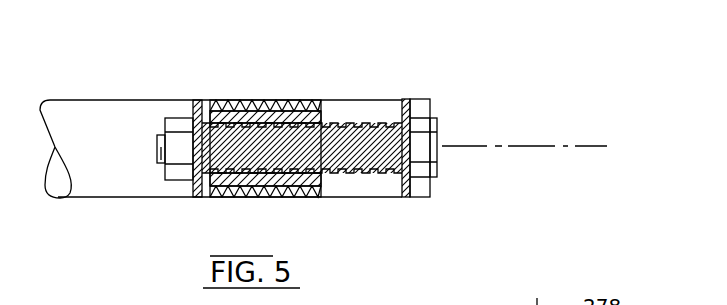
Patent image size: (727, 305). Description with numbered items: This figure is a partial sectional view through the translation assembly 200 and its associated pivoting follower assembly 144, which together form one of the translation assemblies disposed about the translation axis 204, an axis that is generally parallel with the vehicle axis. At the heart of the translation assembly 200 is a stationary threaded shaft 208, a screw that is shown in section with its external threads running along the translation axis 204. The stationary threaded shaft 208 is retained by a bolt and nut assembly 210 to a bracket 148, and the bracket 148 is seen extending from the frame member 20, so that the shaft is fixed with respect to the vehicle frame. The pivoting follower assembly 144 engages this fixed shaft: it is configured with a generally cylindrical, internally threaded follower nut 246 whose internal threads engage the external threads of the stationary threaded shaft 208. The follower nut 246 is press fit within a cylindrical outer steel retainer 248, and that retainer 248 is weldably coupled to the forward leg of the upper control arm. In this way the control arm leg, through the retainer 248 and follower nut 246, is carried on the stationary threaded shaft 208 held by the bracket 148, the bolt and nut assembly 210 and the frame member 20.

The frame member 20 is at (121, 185).
The pivoting follower assembly 144 is at (248, 119).
The bracket 148 is at (407, 110).
The translation assembly 200 is at (346, 136).
The translation axis 204 is at (516, 146).
The stationary threaded shaft 208 is at (343, 175).
The bolt and nut assembly 210 is at (425, 118).
The follower nut 246 is at (252, 115).
The outer steel retainer 248 is at (228, 99).